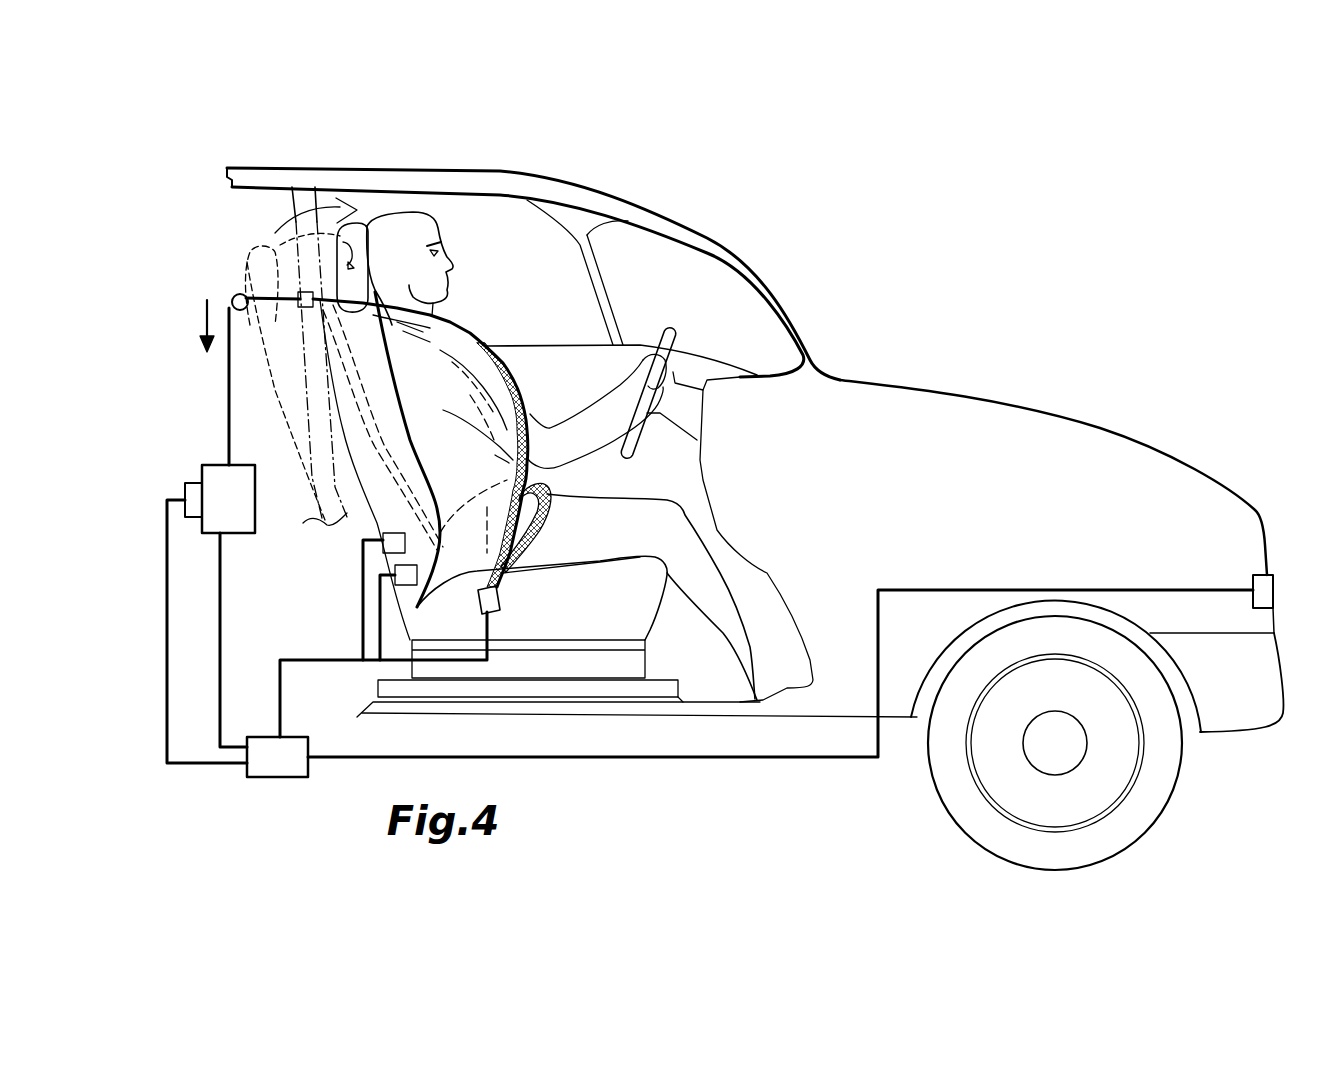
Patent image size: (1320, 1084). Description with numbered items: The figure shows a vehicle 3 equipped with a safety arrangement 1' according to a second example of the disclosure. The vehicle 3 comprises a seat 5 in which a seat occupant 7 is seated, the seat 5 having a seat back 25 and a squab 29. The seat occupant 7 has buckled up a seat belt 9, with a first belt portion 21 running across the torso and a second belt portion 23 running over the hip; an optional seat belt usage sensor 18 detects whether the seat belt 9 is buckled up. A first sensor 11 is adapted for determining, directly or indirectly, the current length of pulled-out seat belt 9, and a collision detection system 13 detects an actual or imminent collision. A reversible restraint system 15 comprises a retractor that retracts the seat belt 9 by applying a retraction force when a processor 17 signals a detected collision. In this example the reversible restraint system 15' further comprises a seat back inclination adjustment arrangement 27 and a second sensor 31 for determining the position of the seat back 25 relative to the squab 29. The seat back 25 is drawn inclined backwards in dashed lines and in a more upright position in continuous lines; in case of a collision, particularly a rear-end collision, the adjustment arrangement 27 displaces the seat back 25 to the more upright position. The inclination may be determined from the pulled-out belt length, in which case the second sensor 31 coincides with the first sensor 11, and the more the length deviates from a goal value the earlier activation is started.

The safety arrangement 1' is at (476, 374).
The vehicle 3 is at (983, 333).
The seat 5 is at (640, 660).
The seat occupant 7 is at (460, 250).
The seat belt 9 is at (513, 463).
The first sensor 11 is at (192, 492).
The collision detection system 13 is at (1263, 580).
The reversible restraint system 15 is at (238, 606).
The reversible restraint system 15' is at (383, 674).
The processor 17 is at (268, 748).
The seat belt usage sensor 18 is at (499, 603).
The first belt portion 21 is at (512, 389).
The second belt portion 23 is at (535, 523).
The seat back 25 is at (382, 390).
The seat back inclination adjustment arrangement 27 is at (407, 578).
The squab 29 is at (618, 615).
The second sensor 31 is at (385, 535).